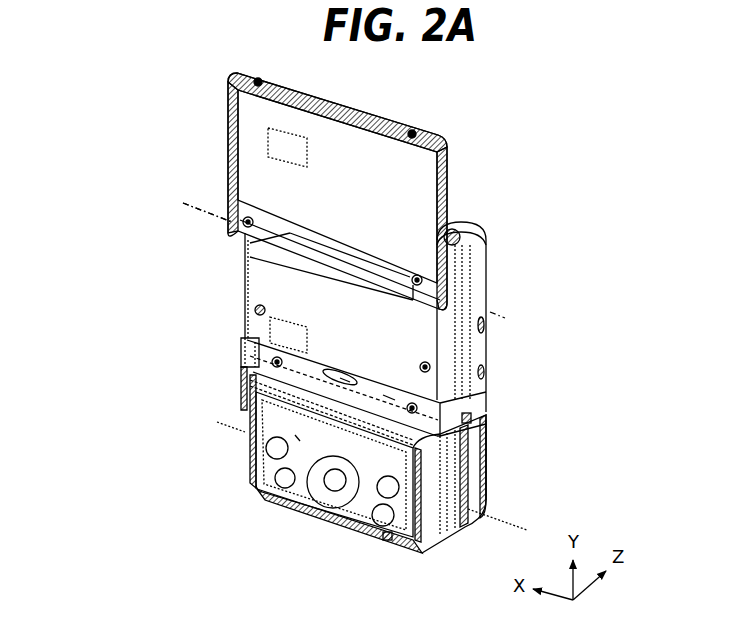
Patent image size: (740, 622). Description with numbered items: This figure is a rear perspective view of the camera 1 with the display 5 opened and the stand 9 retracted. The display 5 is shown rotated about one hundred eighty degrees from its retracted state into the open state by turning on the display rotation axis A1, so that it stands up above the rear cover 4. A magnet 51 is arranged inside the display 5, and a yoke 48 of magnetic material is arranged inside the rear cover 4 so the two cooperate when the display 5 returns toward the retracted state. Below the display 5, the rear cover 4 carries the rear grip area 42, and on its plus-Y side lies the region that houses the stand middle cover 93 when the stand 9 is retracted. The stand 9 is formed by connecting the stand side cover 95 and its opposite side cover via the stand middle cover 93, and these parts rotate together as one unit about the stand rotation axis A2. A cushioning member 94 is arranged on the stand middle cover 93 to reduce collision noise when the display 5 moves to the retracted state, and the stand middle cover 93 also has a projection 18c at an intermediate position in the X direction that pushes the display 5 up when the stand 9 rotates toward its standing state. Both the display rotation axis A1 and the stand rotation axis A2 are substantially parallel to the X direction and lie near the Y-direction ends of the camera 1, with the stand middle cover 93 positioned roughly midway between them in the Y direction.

The camera 1 is at (84, 106).
The display 5 is at (400, 124).
The magnet 51 is at (268, 136).
The rear cover 4 is at (260, 278).
The yoke 48 is at (250, 322).
The rear grip area 42 is at (240, 383).
The cushioning member 94 is at (340, 378).
The projection 18c is at (340, 378).
The stand middle cover 93 is at (383, 395).
The stand 9 is at (490, 453).
The stand side cover 95 is at (478, 490).
The display rotation axis A1 is at (510, 315).
The stand rotation axis A2 is at (510, 518).